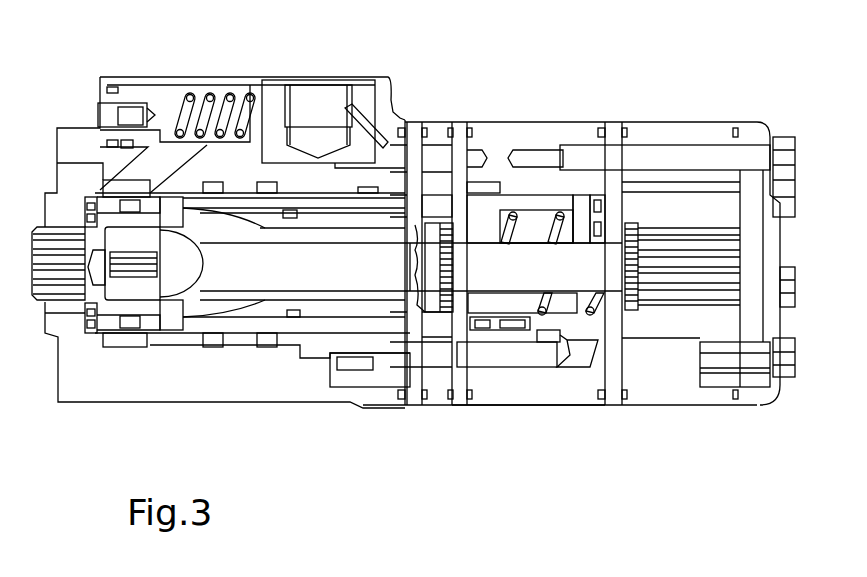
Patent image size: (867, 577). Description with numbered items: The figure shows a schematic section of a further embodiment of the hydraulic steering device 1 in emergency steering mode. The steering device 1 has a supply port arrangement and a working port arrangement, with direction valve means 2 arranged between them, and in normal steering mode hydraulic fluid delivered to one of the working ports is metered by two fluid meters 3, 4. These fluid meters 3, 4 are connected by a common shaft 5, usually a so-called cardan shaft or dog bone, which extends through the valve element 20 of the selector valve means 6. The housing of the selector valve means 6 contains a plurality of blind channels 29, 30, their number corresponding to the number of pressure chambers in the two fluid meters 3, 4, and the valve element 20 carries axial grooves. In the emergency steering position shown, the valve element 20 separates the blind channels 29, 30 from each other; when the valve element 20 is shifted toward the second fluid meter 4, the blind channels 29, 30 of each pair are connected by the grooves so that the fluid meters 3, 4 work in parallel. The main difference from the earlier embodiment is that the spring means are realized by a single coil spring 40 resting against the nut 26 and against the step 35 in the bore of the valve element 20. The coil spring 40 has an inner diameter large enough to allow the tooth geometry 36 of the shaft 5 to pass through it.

The hydraulic steering device 1 is at (652, 86).
The direction valve means 2 is at (263, 413).
The first fluid meter 3 is at (439, 418).
The second fluid meter 4 is at (706, 412).
The shaft 5 is at (503, 270).
The selector valve means 6 is at (547, 430).
The valve element 20 is at (520, 203).
The nut 26 is at (603, 210).
The blind channel 29 is at (513, 353).
The blind channel 30 is at (602, 353).
The step 35 is at (508, 193).
The tooth geometry 36 is at (634, 307).
The coil spring 40 is at (550, 213).